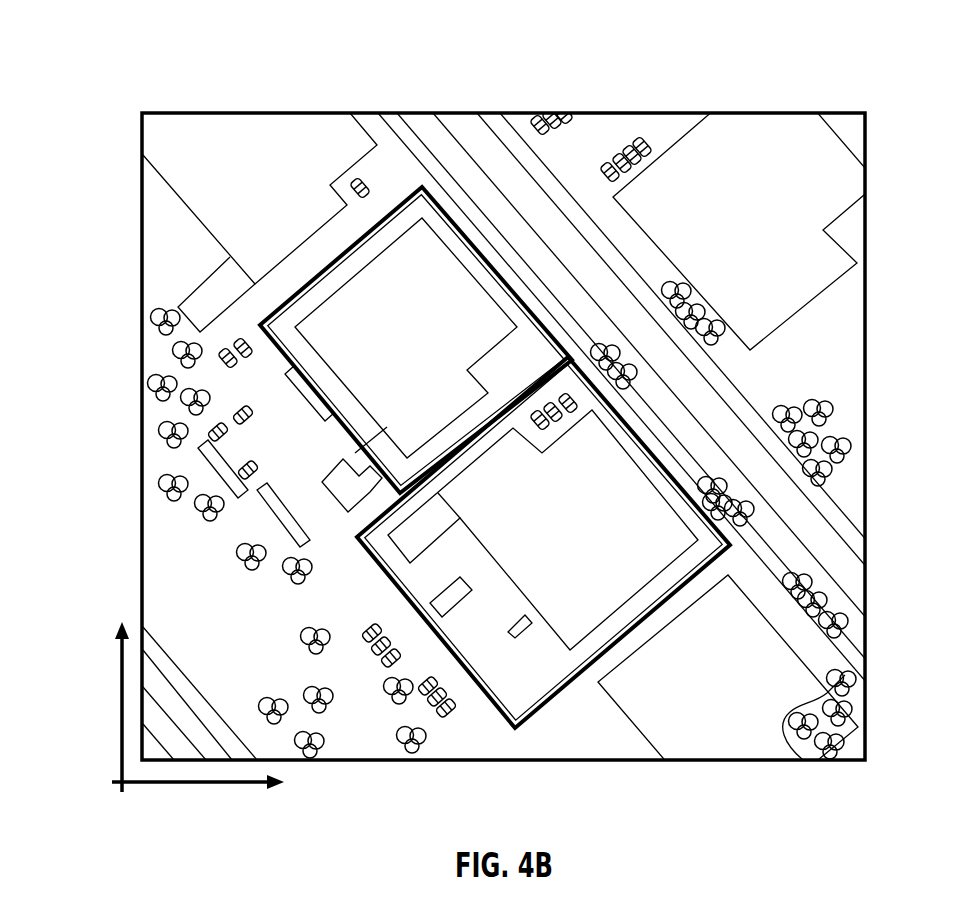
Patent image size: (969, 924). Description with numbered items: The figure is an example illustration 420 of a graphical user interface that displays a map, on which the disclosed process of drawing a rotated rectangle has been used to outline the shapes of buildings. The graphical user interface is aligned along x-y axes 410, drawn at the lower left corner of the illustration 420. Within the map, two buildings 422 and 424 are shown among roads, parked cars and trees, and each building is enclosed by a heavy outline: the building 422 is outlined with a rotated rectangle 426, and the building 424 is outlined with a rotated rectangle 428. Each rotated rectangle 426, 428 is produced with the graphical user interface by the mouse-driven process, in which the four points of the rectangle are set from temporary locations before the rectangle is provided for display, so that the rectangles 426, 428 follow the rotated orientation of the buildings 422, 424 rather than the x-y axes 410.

The x-y axes 410 is at (123, 802).
The example illustration 420 is at (148, 82).
The building 422 is at (556, 537).
The building 424 is at (388, 335).
The rotated rectangle 426 is at (385, 572).
The rotated rectangle 428 is at (337, 253).